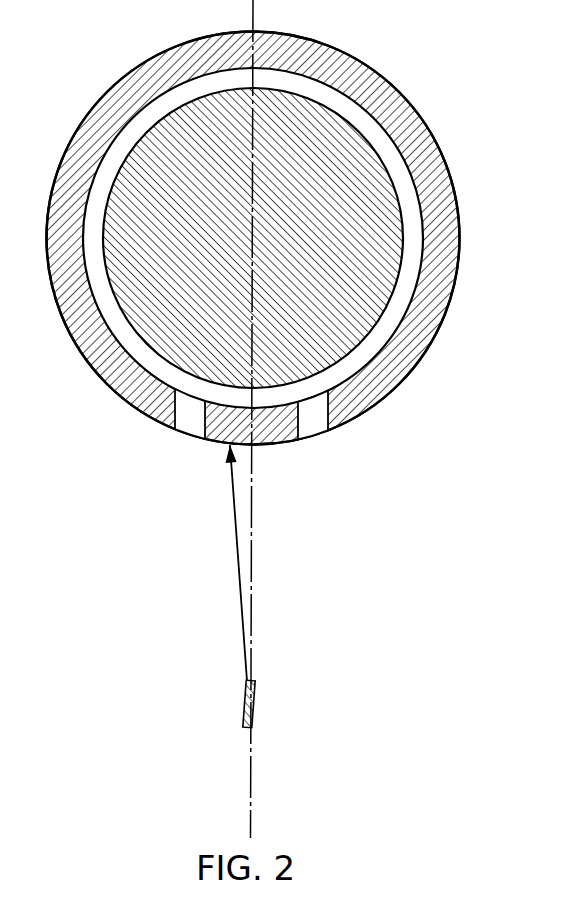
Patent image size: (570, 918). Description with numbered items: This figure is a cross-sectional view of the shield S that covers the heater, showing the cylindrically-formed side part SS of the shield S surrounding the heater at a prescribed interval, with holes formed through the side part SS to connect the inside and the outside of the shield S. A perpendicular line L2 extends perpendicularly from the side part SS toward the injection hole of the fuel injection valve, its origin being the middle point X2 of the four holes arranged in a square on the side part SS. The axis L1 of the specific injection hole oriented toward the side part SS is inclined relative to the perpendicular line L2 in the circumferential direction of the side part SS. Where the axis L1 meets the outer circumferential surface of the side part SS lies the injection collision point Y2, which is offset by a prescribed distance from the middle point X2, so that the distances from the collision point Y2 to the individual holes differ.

The shield S is at (472, 349).
The side part SS is at (85, 360).
The axis L1 is at (238, 558).
The perpendicular line L2 is at (252, 568).
The injection collision point Y2 is at (228, 449).
The middle point X2 is at (253, 450).